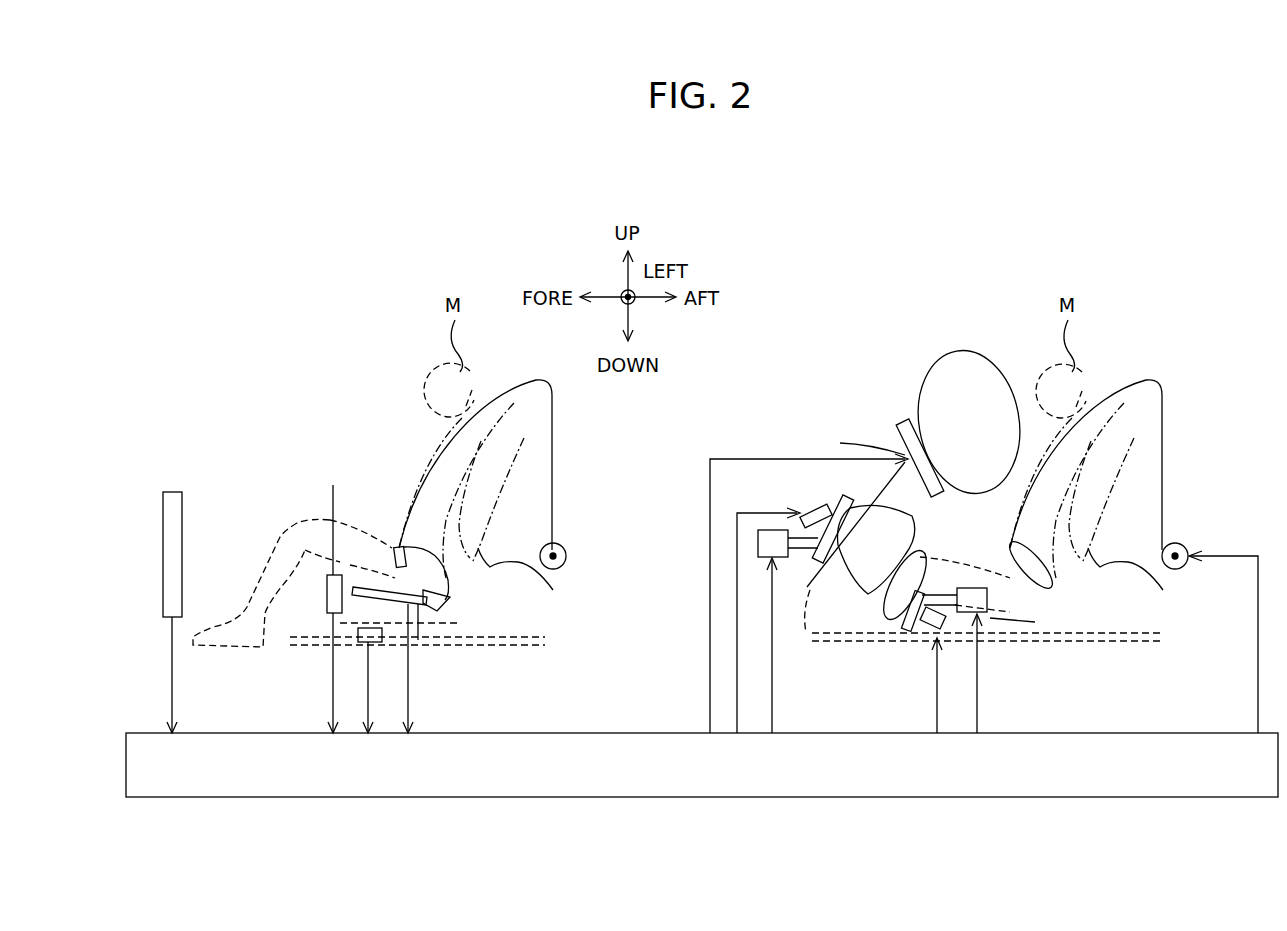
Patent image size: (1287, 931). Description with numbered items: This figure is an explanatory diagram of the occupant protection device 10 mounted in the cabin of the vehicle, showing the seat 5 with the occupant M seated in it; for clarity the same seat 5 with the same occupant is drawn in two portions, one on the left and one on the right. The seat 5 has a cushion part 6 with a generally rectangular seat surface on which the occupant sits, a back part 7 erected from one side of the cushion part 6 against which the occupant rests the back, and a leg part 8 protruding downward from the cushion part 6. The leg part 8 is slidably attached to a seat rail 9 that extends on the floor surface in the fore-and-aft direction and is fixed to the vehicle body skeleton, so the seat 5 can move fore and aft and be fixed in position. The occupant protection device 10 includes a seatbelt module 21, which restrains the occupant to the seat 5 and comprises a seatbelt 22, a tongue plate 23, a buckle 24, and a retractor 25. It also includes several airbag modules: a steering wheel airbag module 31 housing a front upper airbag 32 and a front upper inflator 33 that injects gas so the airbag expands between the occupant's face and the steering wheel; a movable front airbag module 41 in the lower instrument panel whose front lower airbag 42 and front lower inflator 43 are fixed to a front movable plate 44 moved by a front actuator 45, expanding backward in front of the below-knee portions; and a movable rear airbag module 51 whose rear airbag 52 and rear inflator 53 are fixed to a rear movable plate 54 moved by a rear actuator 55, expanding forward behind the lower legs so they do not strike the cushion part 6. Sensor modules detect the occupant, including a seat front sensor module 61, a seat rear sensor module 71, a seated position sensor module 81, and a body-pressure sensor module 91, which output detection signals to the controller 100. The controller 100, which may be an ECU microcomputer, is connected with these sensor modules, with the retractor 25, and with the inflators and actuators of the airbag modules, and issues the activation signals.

The seat 5 is at (578, 582).
The cushion part 6 is at (470, 611).
The back part 7 is at (829, 575).
The leg part 8 is at (484, 643).
The seat rail 9 is at (483, 648).
The occupant protection device 10 is at (765, 276).
The seatbelt module 21 is at (562, 434).
The seatbelt 22 is at (554, 503).
The tongue plate 23 is at (396, 547).
The buckle 24 is at (452, 600).
The retractor 25 is at (567, 548).
The steering wheel airbag module 31 is at (920, 290).
The front upper airbag 32 is at (945, 387).
The front upper inflator 33 is at (903, 413).
The front airbag module 41 is at (838, 578).
The front lower airbag 42 is at (870, 503).
The front lower inflator 43 is at (808, 506).
The front movable plate 44 is at (833, 505).
The front actuator 45 is at (766, 528).
The rear airbag module 51 is at (866, 656).
The rear airbag 52 is at (882, 632).
The rear inflator 53 is at (926, 636).
The rear movable plate 54 is at (908, 635).
The rear actuator 55 is at (965, 636).
The seat front sensor module 61 is at (172, 491).
The seat rear sensor module 71 is at (330, 596).
The seated position sensor module 81 is at (362, 644).
The body-pressure sensor module 91 is at (416, 608).
The controller 100 is at (660, 733).